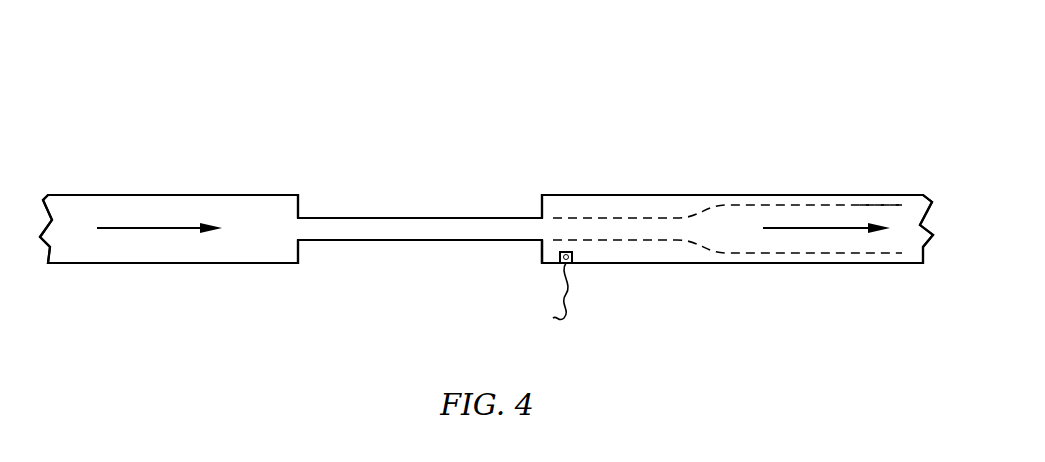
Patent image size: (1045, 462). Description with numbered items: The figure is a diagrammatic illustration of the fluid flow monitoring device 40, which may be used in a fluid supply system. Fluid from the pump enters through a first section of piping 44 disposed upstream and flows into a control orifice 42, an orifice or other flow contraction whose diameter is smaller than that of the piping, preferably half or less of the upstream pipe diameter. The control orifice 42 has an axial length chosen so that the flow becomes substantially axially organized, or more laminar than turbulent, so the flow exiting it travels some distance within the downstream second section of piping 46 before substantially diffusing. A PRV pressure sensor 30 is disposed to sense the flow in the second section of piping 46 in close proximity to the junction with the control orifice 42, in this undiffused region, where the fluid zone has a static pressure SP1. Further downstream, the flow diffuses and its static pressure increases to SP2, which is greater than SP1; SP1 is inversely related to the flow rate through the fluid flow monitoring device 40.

The fluid flow monitoring device 40 is at (783, 73).
The first section of piping 44 is at (153, 192).
The control orifice 42 is at (411, 257).
The second section of piping 46 is at (642, 193).
The PRV pressure sensor 30 is at (571, 256).
The static pressure SP1 is at (552, 250).
The static pressure SP2 is at (875, 202).